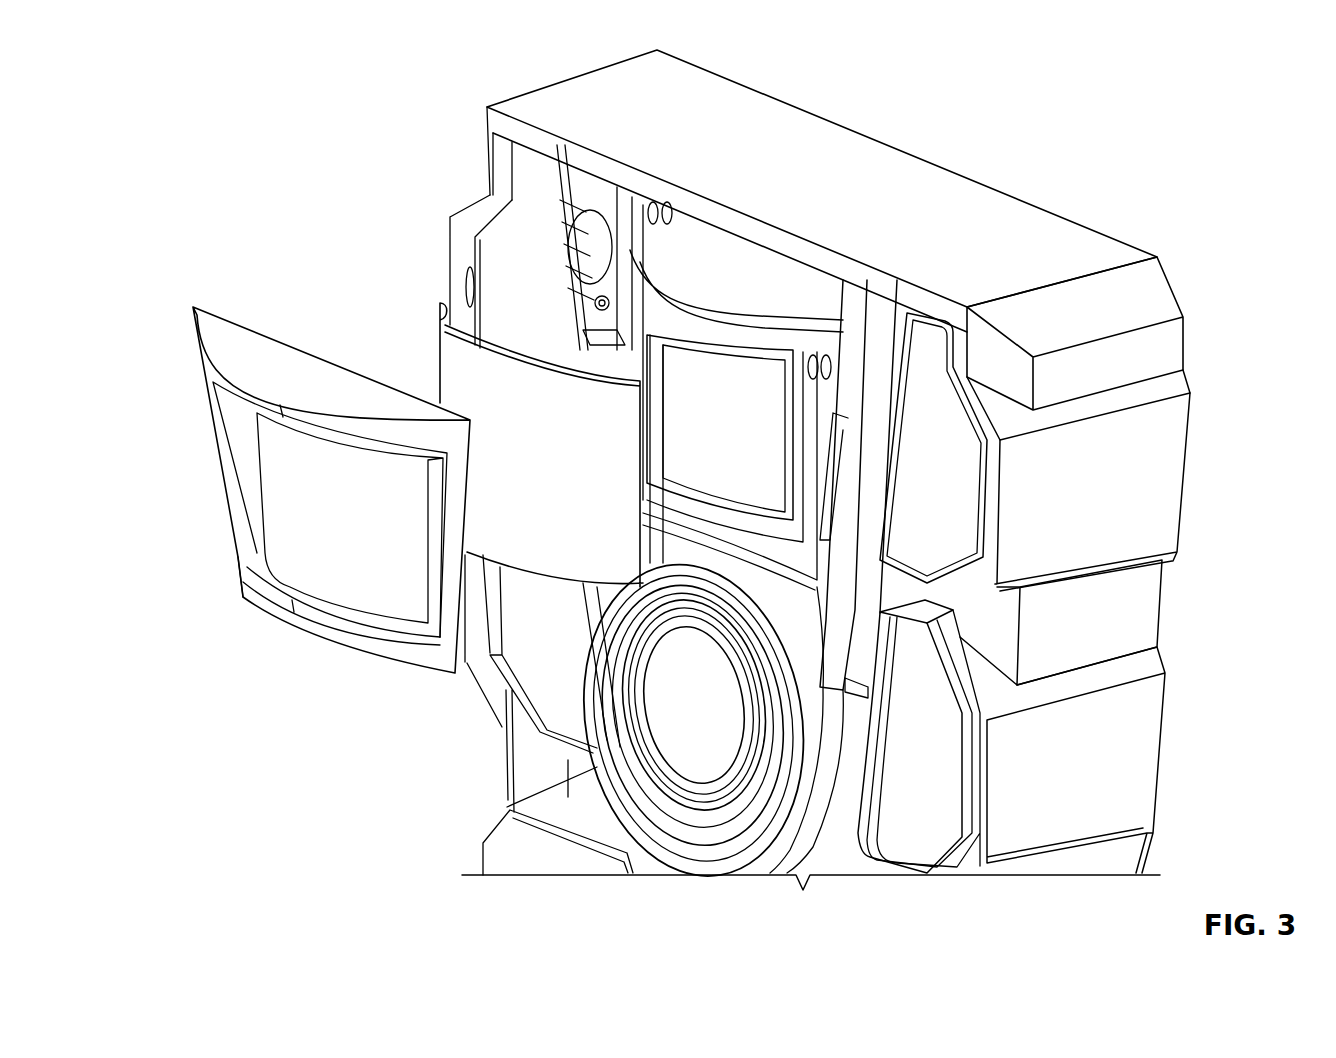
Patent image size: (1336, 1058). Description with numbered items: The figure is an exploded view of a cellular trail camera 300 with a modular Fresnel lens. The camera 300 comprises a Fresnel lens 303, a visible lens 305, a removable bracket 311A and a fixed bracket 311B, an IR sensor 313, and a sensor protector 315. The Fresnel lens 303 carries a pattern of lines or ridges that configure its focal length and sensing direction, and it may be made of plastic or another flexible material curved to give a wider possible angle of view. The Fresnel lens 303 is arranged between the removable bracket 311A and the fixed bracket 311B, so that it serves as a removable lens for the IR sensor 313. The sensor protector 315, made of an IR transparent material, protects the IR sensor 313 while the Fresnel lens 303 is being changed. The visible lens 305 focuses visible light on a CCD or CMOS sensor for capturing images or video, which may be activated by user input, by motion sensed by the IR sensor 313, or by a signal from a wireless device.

The camera 300 is at (283, 79).
The removable bracket 311A is at (184, 308).
The Fresnel lens 303 is at (428, 300).
The sensor protector 315 is at (657, 284).
The IR sensor 313 is at (755, 302).
The fixed bracket 311B is at (803, 336).
The visible lens 305 is at (687, 702).